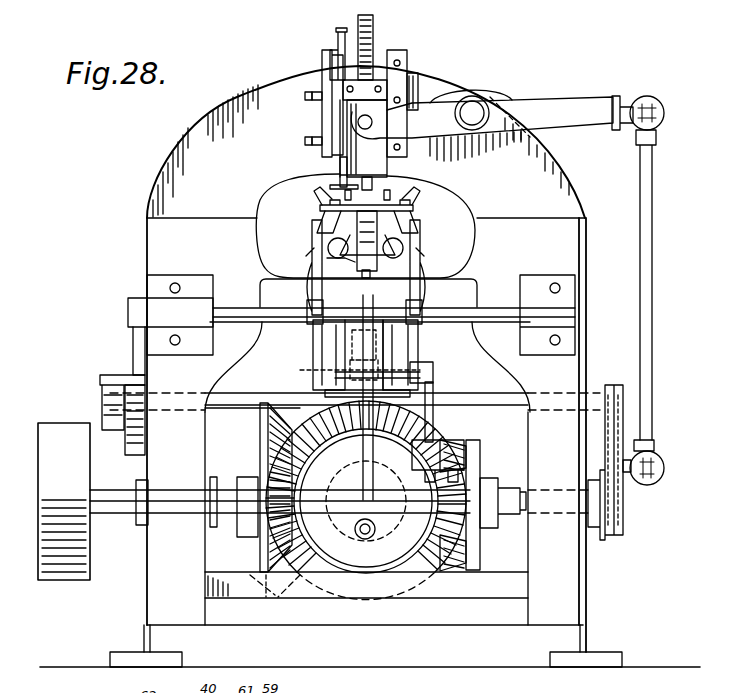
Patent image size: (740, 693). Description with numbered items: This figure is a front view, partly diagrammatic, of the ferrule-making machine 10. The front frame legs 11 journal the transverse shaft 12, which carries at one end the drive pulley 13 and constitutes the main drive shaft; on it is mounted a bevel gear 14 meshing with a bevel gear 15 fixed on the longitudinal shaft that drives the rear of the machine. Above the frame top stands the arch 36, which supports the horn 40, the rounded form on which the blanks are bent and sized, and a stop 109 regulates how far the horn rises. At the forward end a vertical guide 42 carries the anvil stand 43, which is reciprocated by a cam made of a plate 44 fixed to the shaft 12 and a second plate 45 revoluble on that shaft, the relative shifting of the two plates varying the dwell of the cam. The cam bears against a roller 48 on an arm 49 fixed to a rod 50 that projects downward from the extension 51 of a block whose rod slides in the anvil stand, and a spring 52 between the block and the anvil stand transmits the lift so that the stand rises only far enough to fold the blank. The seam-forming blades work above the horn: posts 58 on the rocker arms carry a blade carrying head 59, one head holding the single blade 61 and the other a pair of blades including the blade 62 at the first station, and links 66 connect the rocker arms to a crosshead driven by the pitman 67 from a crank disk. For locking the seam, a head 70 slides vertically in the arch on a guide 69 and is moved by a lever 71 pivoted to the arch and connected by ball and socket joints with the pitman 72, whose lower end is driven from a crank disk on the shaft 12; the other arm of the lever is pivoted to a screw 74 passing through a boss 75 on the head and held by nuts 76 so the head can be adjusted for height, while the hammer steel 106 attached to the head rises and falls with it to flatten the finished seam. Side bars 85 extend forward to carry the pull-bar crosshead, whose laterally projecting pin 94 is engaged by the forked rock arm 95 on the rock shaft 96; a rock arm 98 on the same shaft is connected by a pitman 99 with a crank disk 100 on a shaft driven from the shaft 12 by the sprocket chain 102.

The base 10 is at (356, 668).
The front frame legs 11 is at (576, 602).
The transverse shaft 12 is at (227, 478).
The drive pulley 13 is at (65, 575).
The bevel gear 14 is at (270, 542).
The bevel gear 15 is at (340, 553).
The arch 36 is at (584, 192).
The horn 40 is at (378, 188).
The vertical guide 42 is at (318, 358).
The anvil stand 43 is at (377, 347).
The plate 44 is at (480, 554).
The second plate 45 is at (482, 550).
The roller 48 is at (530, 446).
The arm 49 is at (432, 448).
The rod 50 is at (436, 382).
The extension 51 is at (328, 372).
The spring 52 is at (470, 270).
The posts 58 is at (412, 218).
The blade carrying head 59 is at (420, 206).
The single blade 61 is at (410, 188).
The blade 62 is at (305, 195).
The links 66 is at (426, 258).
The pitman 67 is at (376, 445).
The guide 69 is at (425, 88).
The head 70 is at (408, 60).
The lever 71 is at (565, 95).
The pitman 72 is at (652, 300).
The screw 74 is at (373, 30).
The boss 75 is at (340, 103).
The nuts 76 is at (330, 130).
The side bars 85 is at (312, 265).
The pin 94 is at (408, 238).
The rock arm 95 is at (426, 250).
The rock shaft 96 is at (492, 300).
The rock arm 98 is at (134, 336).
The pitman 99 is at (108, 396).
The crank disk 100 is at (125, 455).
The sprocket chain 102 is at (620, 435).
The hammer steel 106 is at (332, 180).
The stop 109 is at (338, 35).